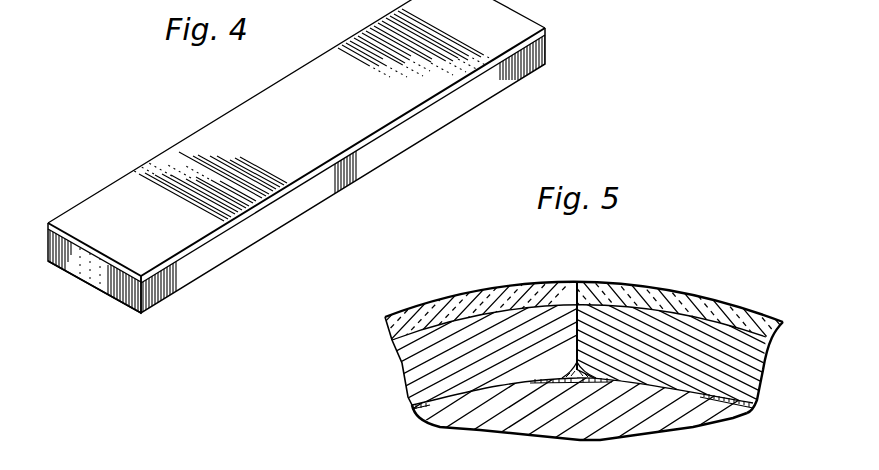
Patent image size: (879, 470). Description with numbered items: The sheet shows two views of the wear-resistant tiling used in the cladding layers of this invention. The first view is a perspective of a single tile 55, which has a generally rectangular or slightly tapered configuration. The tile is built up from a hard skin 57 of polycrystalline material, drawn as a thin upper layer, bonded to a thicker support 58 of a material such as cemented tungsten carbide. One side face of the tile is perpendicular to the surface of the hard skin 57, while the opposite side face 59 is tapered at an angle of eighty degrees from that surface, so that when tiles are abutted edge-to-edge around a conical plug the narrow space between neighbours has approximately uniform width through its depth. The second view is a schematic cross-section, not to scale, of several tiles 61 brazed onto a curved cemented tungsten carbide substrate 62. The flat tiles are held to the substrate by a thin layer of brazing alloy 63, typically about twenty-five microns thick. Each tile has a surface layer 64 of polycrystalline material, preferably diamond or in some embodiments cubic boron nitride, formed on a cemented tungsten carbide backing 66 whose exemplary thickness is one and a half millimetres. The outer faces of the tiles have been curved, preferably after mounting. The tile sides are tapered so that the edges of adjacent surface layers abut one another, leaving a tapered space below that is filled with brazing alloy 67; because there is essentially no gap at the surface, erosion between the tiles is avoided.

In FIG. 4, the tile 55 is at (334, 199).
In FIG. 4, the hard skin 57 is at (164, 269).
In FIG. 4, the support 58 is at (121, 288).
In FIG. 4, the opposite side face 59 is at (235, 241).
In FIG. 5, the tiles 61 is at (402, 362).
In FIG. 5, the cemented tungsten carbide substrate 62 is at (697, 428).
In FIG. 5, the thin layer of brazing alloy 63 is at (756, 407).
In FIG. 5, the surface layer 64 is at (522, 286).
In FIG. 5, the cemented tungsten carbide backing 66 is at (420, 380).
In FIG. 5, the brazing alloy 67 is at (587, 332).